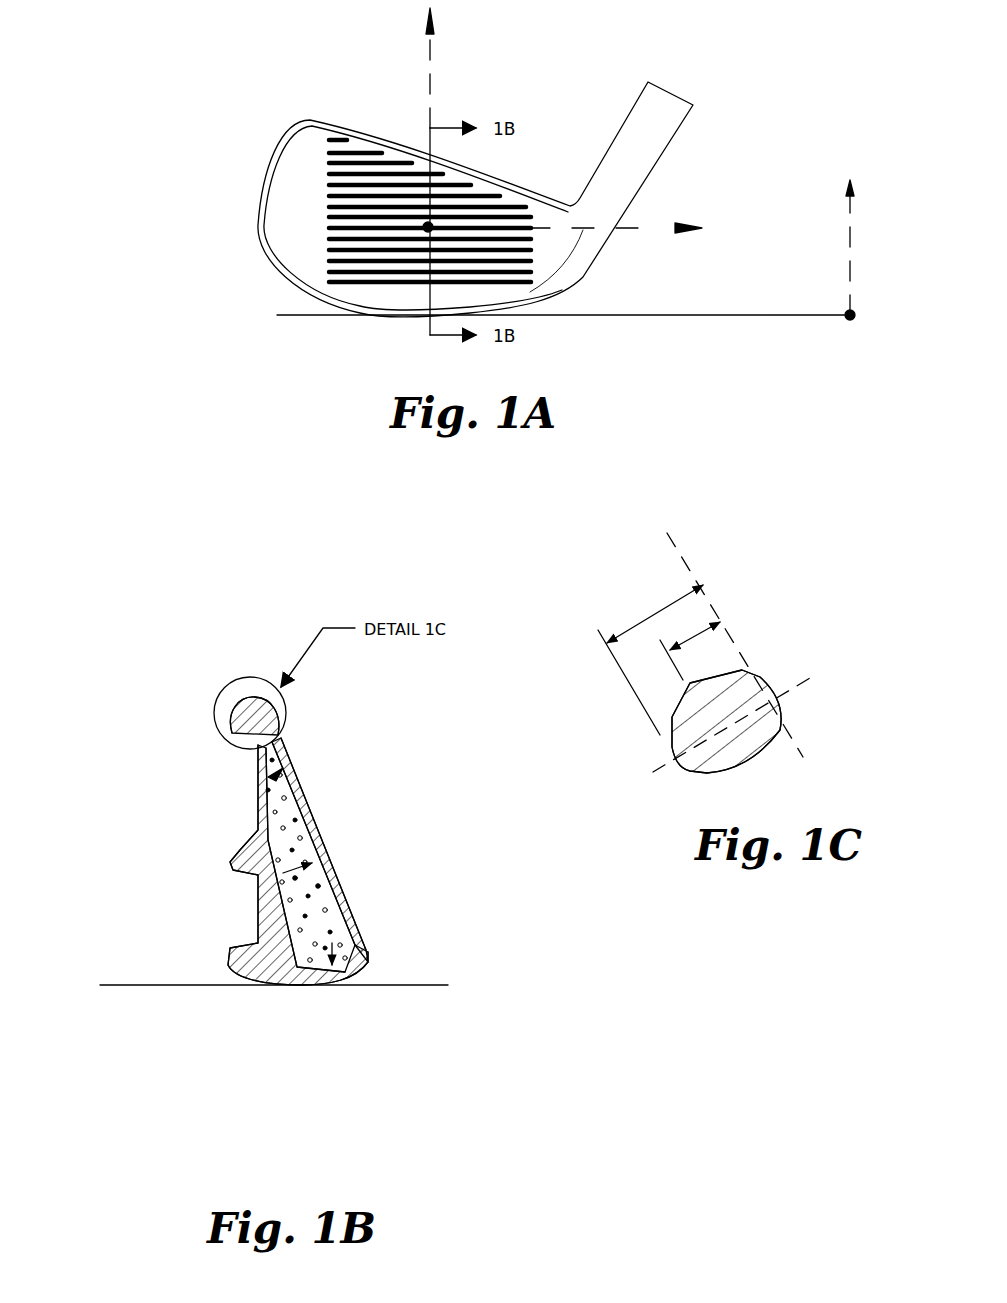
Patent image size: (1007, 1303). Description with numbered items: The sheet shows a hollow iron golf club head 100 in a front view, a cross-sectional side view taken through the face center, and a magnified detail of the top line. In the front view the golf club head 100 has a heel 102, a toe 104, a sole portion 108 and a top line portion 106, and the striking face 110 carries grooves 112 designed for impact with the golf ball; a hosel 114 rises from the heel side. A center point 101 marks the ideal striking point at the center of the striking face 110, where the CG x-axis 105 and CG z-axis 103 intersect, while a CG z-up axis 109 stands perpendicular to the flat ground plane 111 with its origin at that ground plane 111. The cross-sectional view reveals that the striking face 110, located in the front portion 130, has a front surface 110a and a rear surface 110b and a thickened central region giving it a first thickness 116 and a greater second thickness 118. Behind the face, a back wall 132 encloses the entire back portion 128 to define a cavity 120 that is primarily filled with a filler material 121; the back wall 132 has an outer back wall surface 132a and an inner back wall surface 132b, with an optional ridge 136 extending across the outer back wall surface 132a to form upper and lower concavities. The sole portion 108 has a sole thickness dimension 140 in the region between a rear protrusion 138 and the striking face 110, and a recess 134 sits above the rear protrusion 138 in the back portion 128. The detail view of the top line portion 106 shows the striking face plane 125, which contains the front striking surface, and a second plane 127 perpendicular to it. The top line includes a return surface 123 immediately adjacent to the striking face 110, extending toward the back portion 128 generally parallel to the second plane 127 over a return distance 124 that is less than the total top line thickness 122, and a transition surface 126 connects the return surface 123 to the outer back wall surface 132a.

In FIG. 1A, the hollow iron golf club head 100 is at (808, 112).
In FIG. 1B, the hollow iron golf club head 100 is at (125, 598).
In FIG. 1A, the center point 101 is at (431, 223).
In FIG. 1A, the heel 102 is at (608, 275).
In FIG. 1A, the CG z-axis 103 is at (433, 52).
In FIG. 1A, the toe 104 is at (215, 213).
In FIG. 1A, the CG x-axis 105 is at (645, 225).
In FIG. 1A, the top line portion 106 is at (368, 128).
In FIG. 1B, the top line portion 106 is at (247, 650).
In FIG. 1A, the sole portion 108 is at (395, 335).
In FIG. 1B, the sole portion 108 is at (288, 1015).
In FIG. 1A, the CG z-up axis 109 is at (852, 237).
In FIG. 1A, the striking face 110 is at (310, 180).
In FIG. 1B, the striking face 110 is at (307, 792).
In FIG. 1B, the front surface 110a is at (355, 922).
In FIG. 1B, the rear surface 110b is at (352, 912).
In FIG. 1A, the ground plane 111 is at (728, 315).
In FIG. 1B, the ground plane 111 is at (433, 985).
In FIG. 1A, the grooves 112 is at (335, 230).
In FIG. 1A, the hosel 114 is at (648, 140).
In FIG. 1B, the first thickness 116 is at (295, 760).
In FIG. 1B, the second thickness 118 is at (333, 855).
In FIG. 1B, the cavity 120 is at (293, 917).
In FIG. 1B, the filler material 121 is at (280, 890).
In FIG. 1C, the total top line thickness 122 is at (703, 585).
In FIG. 1C, the return surface 123 is at (743, 670).
In FIG. 1C, the return distance 124 is at (720, 622).
In FIG. 1C, the striking face plane 125 is at (660, 520).
In FIG. 1C, the transition surface 126 is at (673, 718).
In FIG. 1C, the second plane 127 is at (790, 690).
In FIG. 1B, the back portion 128 is at (128, 760).
In FIG. 1B, the front portion 130 is at (412, 732).
In FIG. 1B, the back wall 132 is at (262, 810).
In FIG. 1B, the outer back wall surface 132a is at (260, 795).
In FIG. 1B, the inner back wall surface 132b is at (260, 770).
In FIG. 1B, the recess 134 is at (242, 928).
In FIG. 1B, the ridge 136 is at (238, 852).
In FIG. 1B, the rear protrusion 138 is at (245, 963).
In FIG. 1B, the sole thickness dimension 140 is at (335, 985).